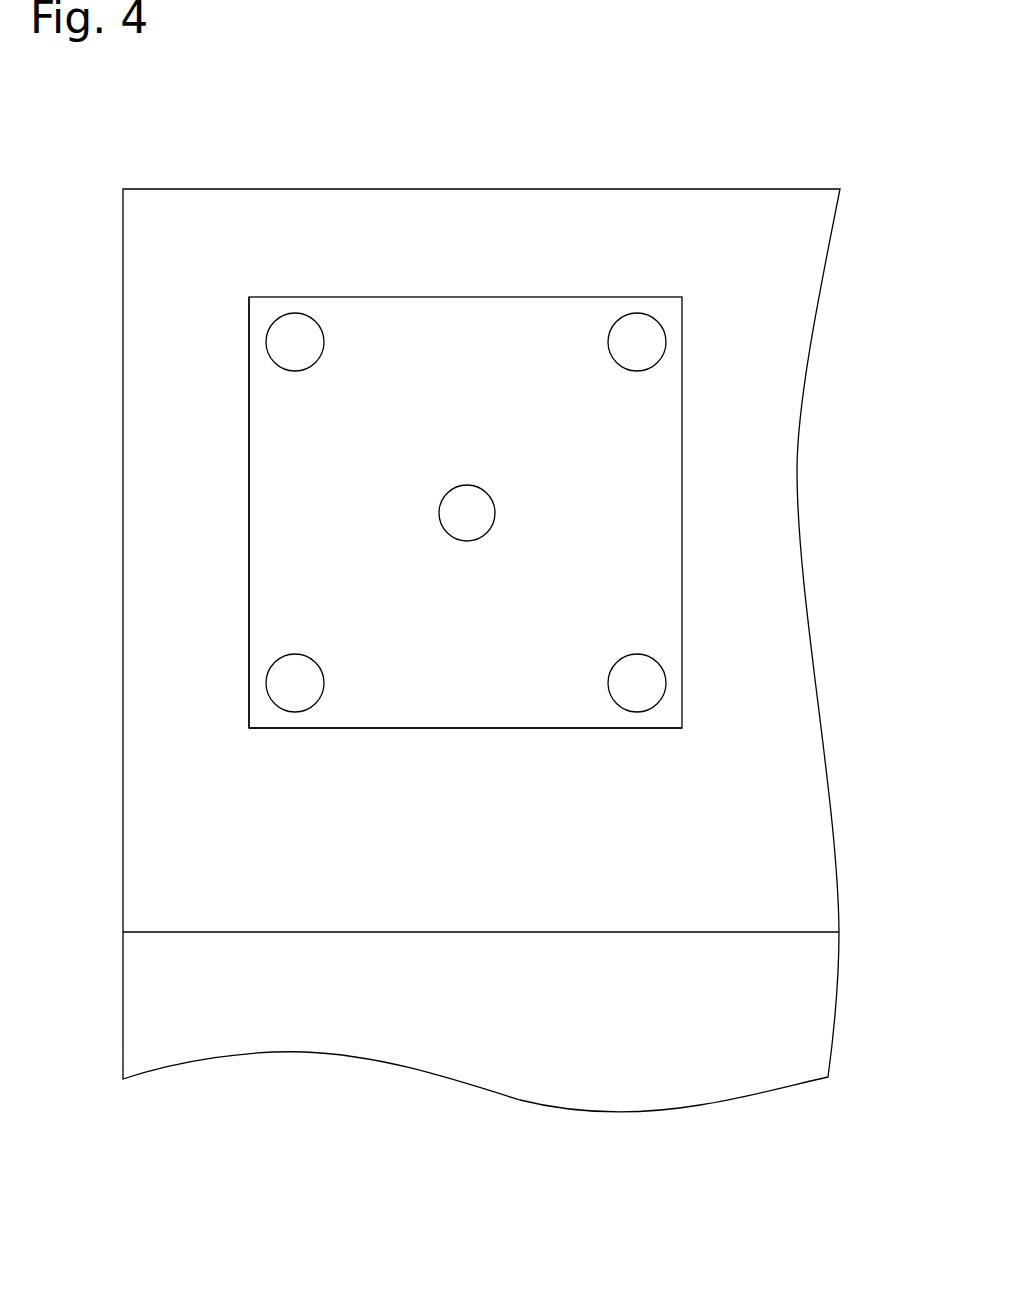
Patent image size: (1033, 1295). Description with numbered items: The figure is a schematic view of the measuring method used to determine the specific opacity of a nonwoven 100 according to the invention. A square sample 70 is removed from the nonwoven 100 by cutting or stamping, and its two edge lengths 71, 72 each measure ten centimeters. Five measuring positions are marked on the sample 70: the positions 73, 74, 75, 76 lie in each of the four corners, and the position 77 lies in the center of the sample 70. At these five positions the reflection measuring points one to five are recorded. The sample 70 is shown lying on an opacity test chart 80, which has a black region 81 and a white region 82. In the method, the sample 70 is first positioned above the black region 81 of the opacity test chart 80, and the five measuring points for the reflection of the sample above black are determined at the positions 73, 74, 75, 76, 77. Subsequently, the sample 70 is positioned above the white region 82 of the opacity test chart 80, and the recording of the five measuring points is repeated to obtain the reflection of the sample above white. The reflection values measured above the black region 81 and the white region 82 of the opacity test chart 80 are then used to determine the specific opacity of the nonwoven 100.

The sample 70 is at (532, 755).
The edge length 71 is at (249, 518).
The edge length 72 is at (460, 733).
The position 73 is at (295, 332).
The position 74 is at (635, 334).
The position 75 is at (290, 690).
The position 76 is at (636, 692).
The position 77 is at (467, 512).
The opacity test chart 80 is at (768, 325).
The black region 81 is at (778, 758).
The white region 82 is at (783, 1000).
The nonwoven 100 is at (640, 427).